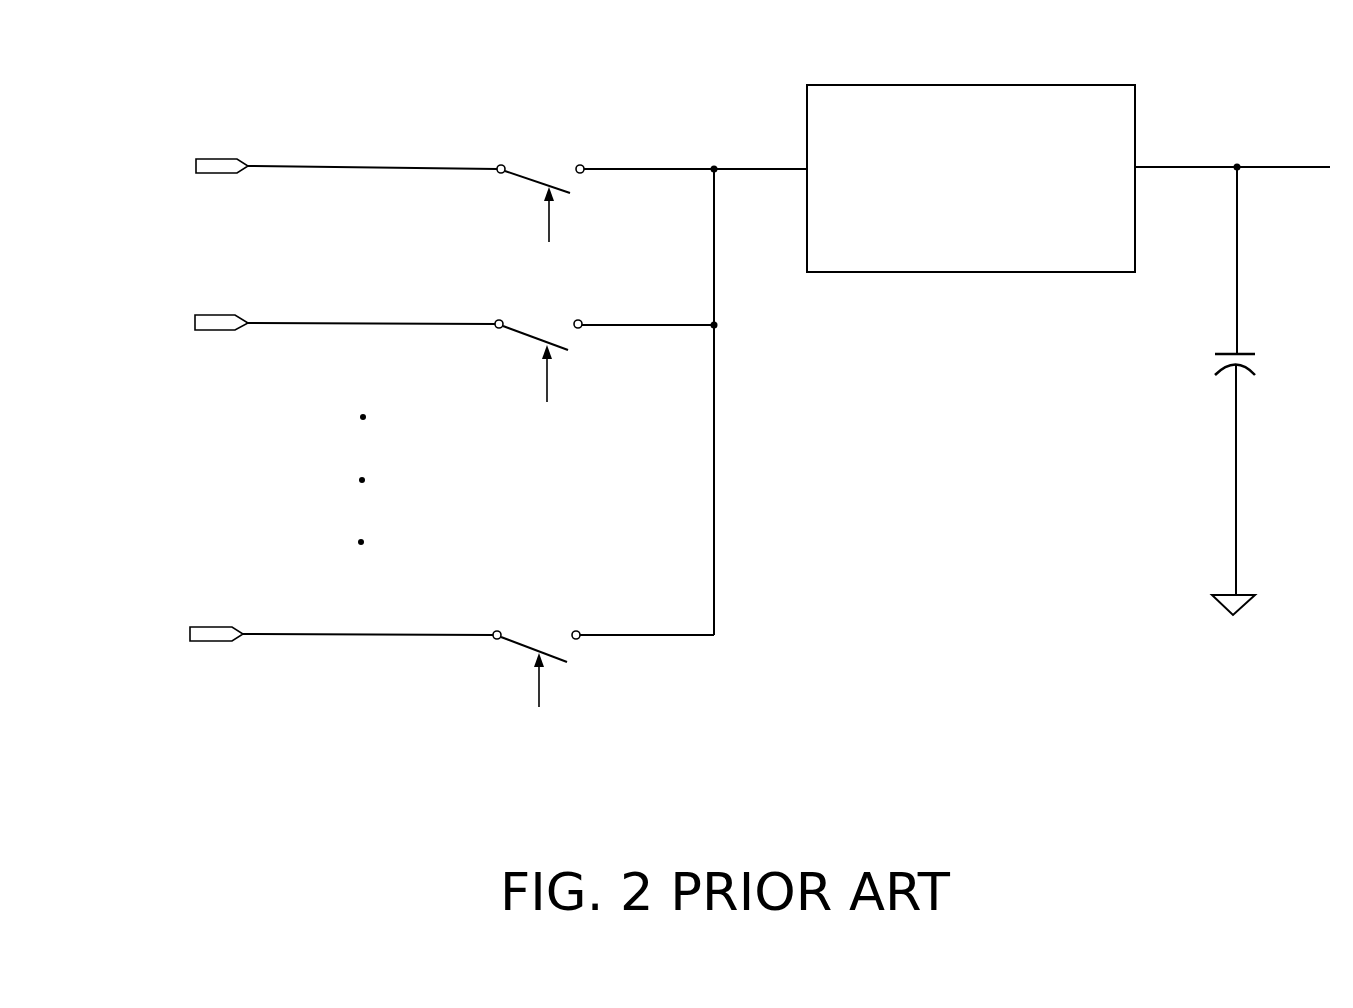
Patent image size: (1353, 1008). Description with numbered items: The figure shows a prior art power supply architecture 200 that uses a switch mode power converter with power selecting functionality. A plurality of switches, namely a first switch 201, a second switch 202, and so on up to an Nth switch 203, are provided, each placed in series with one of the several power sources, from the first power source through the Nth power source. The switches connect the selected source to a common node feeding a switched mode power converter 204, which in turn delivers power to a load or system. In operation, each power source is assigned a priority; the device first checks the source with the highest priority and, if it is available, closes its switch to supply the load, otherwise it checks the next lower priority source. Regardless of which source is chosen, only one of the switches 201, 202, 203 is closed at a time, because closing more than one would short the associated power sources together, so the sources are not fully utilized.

The power supply architecture 200 is at (183, 84).
The switch SW1 201 is at (509, 173).
The switch SW2 202 is at (507, 329).
The switch SWN 203 is at (505, 640).
The switched mode power converter 204 is at (970, 272).